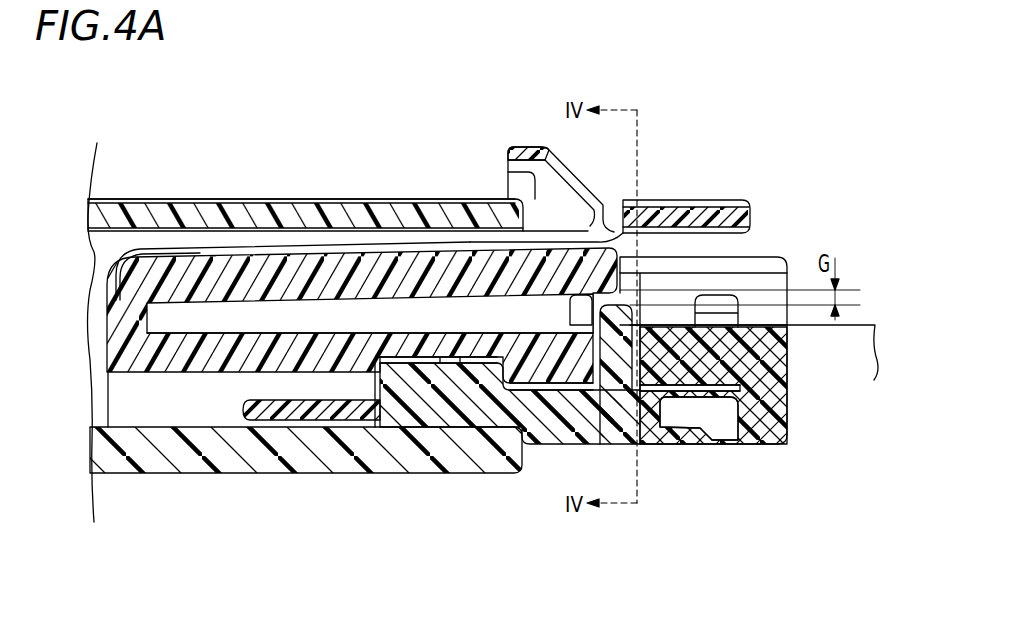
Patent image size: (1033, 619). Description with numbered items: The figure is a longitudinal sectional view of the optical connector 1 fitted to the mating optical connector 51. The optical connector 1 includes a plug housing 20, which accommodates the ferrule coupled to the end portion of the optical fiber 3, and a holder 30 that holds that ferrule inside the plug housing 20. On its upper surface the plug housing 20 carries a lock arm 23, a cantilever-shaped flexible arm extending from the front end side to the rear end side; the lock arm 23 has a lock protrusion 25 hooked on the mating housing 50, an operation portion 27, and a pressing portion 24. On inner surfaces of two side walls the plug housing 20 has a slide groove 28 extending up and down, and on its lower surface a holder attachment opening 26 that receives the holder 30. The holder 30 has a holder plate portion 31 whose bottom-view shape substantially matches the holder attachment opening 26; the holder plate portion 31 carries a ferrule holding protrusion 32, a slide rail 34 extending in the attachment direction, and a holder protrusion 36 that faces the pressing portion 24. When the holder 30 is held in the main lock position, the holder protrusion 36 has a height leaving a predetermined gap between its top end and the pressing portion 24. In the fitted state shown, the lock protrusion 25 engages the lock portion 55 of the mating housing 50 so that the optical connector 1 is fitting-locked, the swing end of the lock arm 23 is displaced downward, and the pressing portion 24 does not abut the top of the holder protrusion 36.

The optical connector 1 is at (749, 141).
The optical fiber 3 is at (860, 324).
The plug housing 20 is at (198, 227).
The lock arm 23 is at (327, 250).
The pressing portion 24 is at (614, 309).
The lock protrusion 25 is at (500, 334).
The holder attachment opening 26 is at (736, 424).
The operation portion 27 is at (668, 205).
The slide groove 28 is at (790, 396).
The holder 30 is at (545, 448).
The holder plate portion 31 is at (512, 452).
The ferrule holding protrusion 32 is at (432, 346).
The slide rail 34 is at (717, 322).
The holder protrusion 36 is at (603, 240).
The mating housing 50 is at (488, 198).
The mating optical connector 51 is at (263, 162).
The lock portion 55 is at (480, 358).